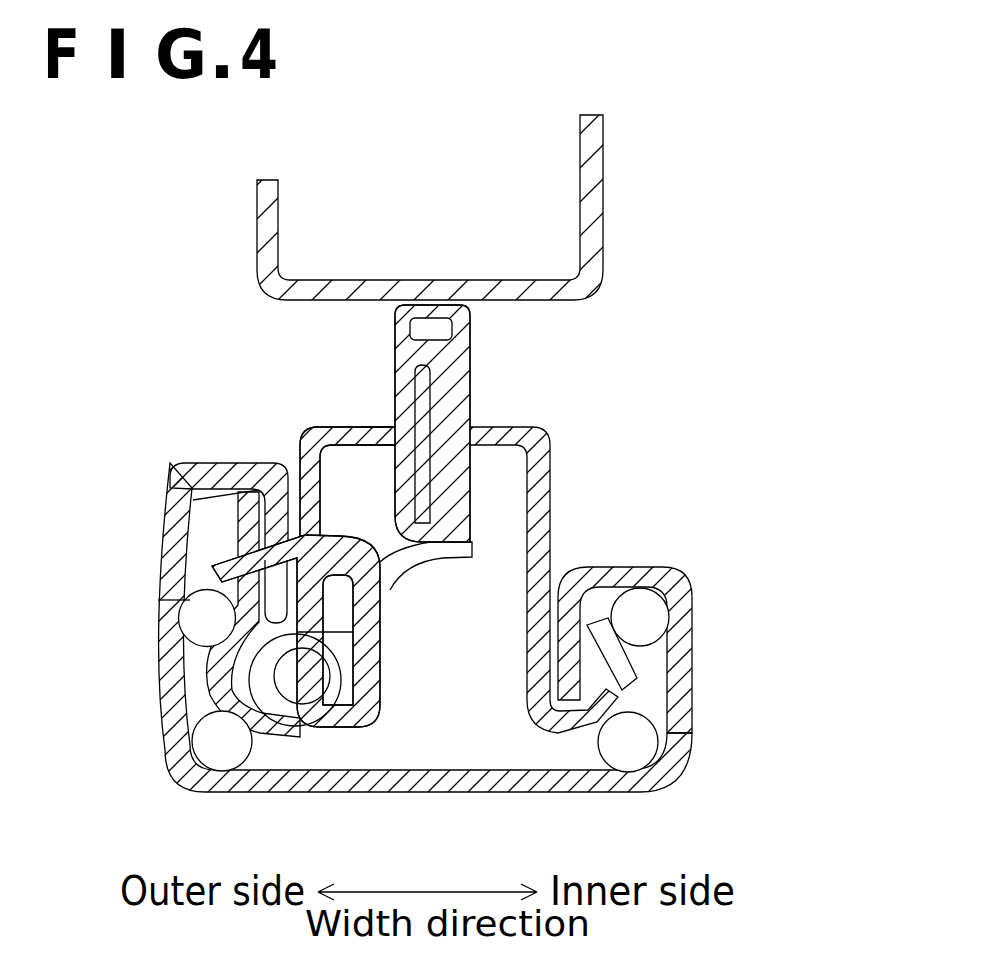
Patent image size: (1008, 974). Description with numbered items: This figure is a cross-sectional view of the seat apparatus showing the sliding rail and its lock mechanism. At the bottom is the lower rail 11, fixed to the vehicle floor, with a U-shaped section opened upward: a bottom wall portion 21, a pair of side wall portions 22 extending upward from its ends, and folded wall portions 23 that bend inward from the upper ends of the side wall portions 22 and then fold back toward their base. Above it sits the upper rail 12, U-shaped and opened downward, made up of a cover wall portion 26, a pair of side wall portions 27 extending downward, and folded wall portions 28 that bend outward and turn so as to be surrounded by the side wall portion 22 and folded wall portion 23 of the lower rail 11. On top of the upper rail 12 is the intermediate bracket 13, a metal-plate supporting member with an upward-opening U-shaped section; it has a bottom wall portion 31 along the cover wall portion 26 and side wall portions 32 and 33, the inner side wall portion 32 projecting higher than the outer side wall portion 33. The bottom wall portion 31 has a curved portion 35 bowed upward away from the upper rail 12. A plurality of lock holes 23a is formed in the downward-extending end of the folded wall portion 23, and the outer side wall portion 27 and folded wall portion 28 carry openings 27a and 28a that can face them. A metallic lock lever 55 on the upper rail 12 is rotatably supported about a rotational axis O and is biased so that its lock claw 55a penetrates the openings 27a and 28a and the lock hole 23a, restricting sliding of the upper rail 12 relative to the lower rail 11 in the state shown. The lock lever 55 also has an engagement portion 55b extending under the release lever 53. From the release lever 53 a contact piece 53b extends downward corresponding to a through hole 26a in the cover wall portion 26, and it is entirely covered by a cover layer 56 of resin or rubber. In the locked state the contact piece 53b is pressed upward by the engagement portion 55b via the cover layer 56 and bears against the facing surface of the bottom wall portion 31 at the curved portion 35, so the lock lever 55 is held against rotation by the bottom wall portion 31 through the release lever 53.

The lower rail 11 is at (423, 621).
The upper rail 12 is at (432, 549).
The intermediate bracket 13 is at (434, 206).
The bottom wall portion 21 is at (420, 795).
The side wall portion 22 is at (430, 654).
The folded wall portion 23 is at (215, 462).
The lock hole 23a is at (190, 488).
The cover wall portion 26 is at (426, 549).
The through hole 26a is at (360, 430).
The side wall portion 27 is at (300, 450).
The opening 27a is at (322, 522).
The folded wall portion 28 is at (172, 718).
The opening 28a is at (158, 600).
The bottom wall portion 31 is at (431, 207).
The side wall portion 32 is at (431, 207).
The side wall portion 33 is at (262, 208).
The curved portion 35 is at (431, 207).
The release lever 53 is at (379, 423).
The contact piece 53b is at (474, 423).
The lock lever 55 is at (280, 680).
The lock claw 55a is at (210, 548).
The engagement portion 55b is at (440, 560).
The cover layer 56 is at (474, 423).
The rotational axis O is at (300, 690).